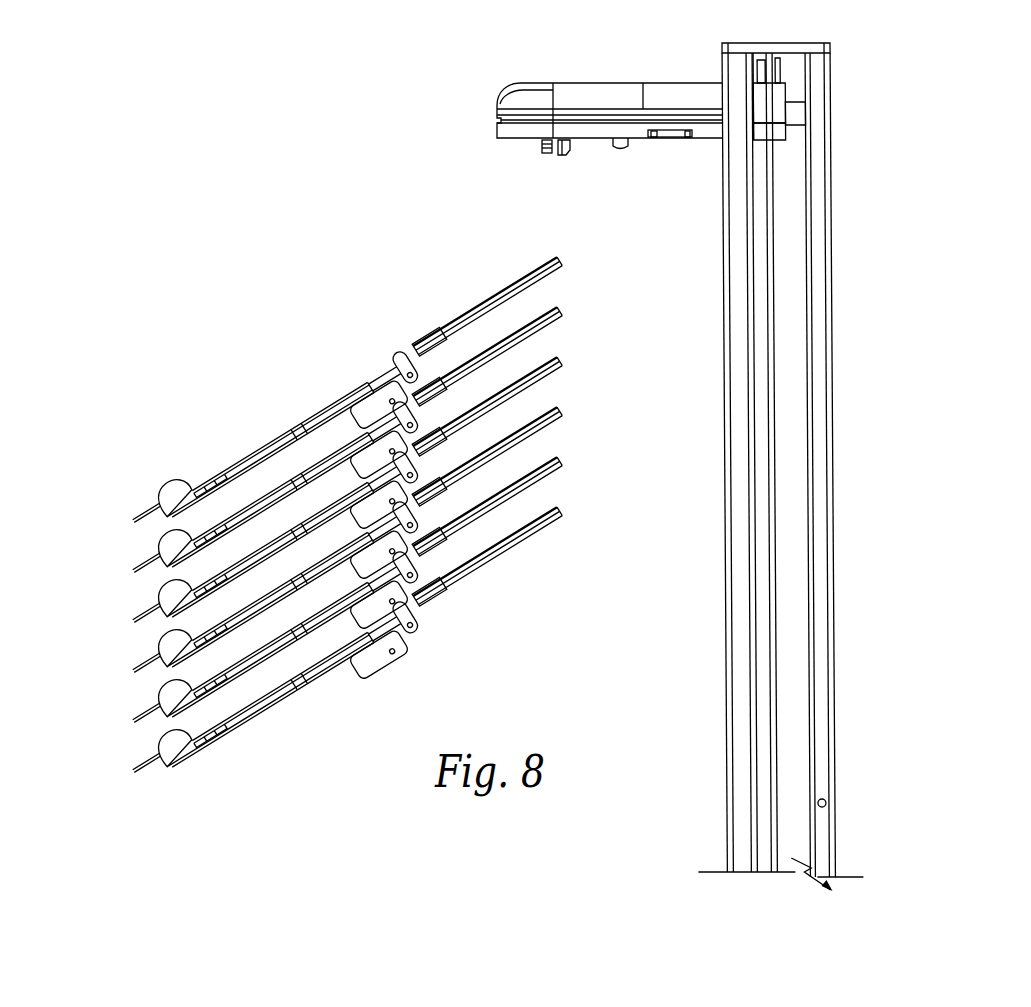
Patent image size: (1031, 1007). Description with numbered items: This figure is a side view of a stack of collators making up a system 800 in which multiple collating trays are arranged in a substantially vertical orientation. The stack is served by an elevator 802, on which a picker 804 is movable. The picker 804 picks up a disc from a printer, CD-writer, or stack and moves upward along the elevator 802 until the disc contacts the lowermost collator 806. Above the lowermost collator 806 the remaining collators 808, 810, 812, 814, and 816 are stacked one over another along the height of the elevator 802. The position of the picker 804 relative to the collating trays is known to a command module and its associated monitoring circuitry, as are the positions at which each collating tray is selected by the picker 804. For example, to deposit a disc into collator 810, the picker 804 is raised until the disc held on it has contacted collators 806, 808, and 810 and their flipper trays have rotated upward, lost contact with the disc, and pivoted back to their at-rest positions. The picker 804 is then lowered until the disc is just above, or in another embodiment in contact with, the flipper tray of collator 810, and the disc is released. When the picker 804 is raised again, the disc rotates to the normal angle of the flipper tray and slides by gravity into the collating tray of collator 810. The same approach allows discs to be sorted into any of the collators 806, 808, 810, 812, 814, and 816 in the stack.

The system 800 is at (952, 64).
The elevator 802 is at (830, 257).
The picker 804 is at (587, 80).
The lowermost collator 806 is at (565, 513).
The collator 808 is at (565, 463).
The collator 810 is at (565, 413).
The collator 812 is at (565, 363).
The collator 814 is at (565, 313).
The collator 816 is at (565, 263).